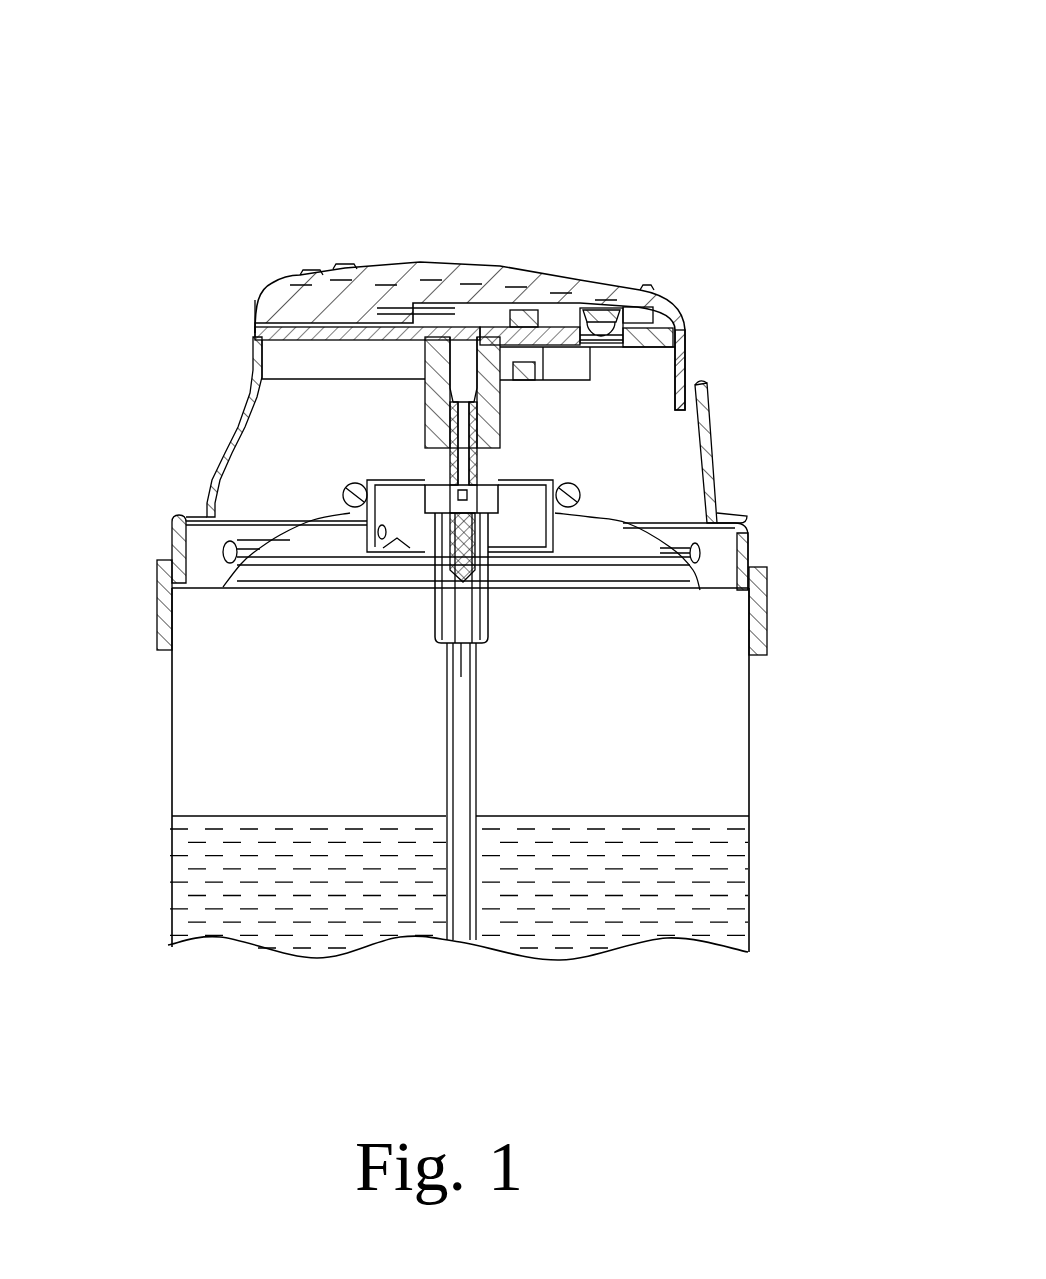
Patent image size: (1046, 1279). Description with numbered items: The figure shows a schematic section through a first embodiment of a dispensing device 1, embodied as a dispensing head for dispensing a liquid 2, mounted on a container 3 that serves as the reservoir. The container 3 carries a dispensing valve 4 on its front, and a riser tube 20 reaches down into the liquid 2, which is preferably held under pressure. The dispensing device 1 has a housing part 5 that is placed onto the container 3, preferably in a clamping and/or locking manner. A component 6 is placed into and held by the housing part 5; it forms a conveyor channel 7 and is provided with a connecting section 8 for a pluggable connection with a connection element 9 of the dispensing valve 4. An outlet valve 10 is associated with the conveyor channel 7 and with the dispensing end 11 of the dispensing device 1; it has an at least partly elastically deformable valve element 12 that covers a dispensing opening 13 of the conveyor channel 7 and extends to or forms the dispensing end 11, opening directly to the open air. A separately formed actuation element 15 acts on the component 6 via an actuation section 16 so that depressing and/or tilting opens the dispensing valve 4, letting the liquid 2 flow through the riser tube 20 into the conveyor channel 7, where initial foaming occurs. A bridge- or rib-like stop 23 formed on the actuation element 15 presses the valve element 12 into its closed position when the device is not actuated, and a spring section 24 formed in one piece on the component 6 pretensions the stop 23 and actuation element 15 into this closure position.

The dispensing device 1 is at (479, 522).
The liquid 2 is at (638, 895).
The container 3 is at (750, 712).
The dispensing valve 4 is at (492, 552).
The housing part 5 is at (713, 485).
The component 6 is at (537, 365).
The conveyor channel 7 is at (452, 362).
The connecting section 8 is at (425, 420).
The connection element 9 is at (475, 462).
The outlet valve 10 is at (315, 302).
The dispensing end 11 is at (255, 333).
The valve element 12 is at (368, 335).
The dispensing opening 13 is at (447, 335).
The actuation element 15 is at (409, 252).
The actuation section 16 is at (620, 292).
The riser tube 20 is at (448, 800).
The stop 23 is at (256, 333).
The spring section 24 is at (623, 347).